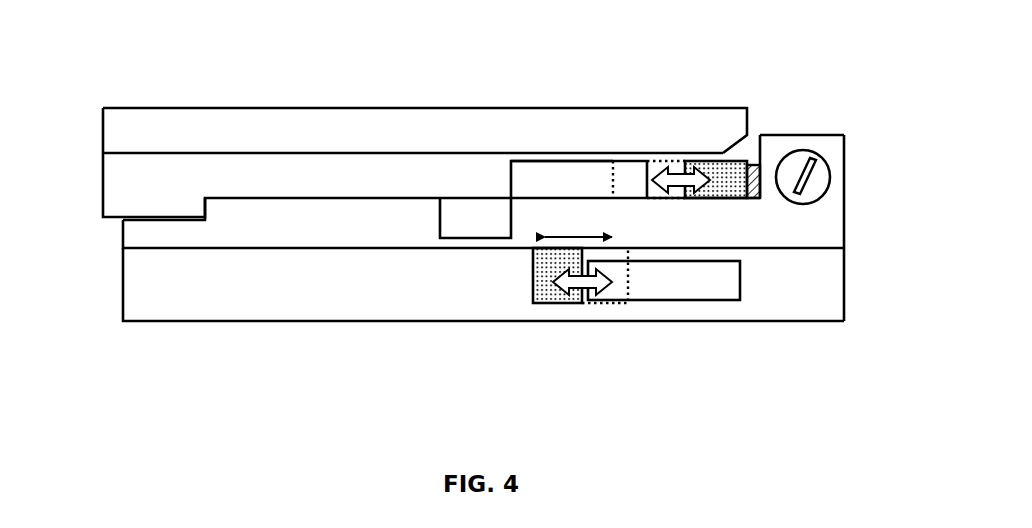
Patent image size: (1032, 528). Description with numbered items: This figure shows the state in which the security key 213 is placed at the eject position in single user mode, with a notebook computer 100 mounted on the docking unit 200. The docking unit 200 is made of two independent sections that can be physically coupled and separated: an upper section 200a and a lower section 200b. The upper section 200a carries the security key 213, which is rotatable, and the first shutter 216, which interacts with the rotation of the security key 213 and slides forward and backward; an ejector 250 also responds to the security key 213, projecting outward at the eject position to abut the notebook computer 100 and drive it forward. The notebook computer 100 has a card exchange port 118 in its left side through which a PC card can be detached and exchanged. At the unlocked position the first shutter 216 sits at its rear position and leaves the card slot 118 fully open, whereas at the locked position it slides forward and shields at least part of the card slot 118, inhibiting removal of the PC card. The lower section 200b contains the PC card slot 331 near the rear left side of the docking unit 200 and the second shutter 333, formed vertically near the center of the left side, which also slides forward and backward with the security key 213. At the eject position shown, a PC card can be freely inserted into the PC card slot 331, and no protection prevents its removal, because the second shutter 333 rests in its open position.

The notebook computer 100 is at (400, 137).
The card exchange port 118 is at (548, 177).
The first shutter 216 is at (715, 168).
The ejector 250 is at (749, 156).
The security key 213 is at (807, 160).
The docking unit 200 is at (852, 242).
The upper section 200a is at (250, 218).
The lower section 200b is at (215, 281).
The PC card slot 331 is at (695, 288).
The second shutter 333 is at (553, 305).